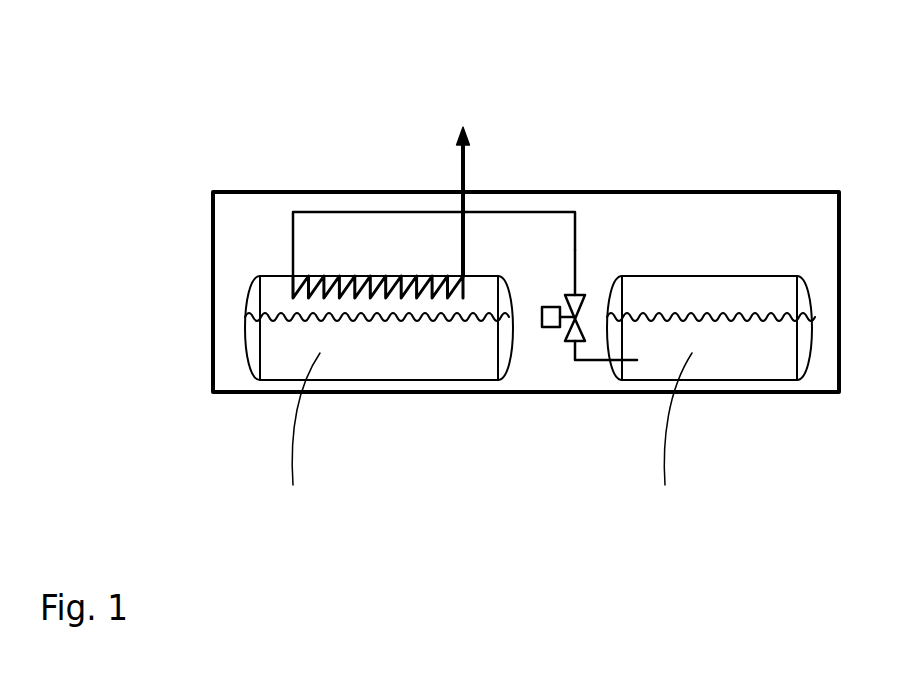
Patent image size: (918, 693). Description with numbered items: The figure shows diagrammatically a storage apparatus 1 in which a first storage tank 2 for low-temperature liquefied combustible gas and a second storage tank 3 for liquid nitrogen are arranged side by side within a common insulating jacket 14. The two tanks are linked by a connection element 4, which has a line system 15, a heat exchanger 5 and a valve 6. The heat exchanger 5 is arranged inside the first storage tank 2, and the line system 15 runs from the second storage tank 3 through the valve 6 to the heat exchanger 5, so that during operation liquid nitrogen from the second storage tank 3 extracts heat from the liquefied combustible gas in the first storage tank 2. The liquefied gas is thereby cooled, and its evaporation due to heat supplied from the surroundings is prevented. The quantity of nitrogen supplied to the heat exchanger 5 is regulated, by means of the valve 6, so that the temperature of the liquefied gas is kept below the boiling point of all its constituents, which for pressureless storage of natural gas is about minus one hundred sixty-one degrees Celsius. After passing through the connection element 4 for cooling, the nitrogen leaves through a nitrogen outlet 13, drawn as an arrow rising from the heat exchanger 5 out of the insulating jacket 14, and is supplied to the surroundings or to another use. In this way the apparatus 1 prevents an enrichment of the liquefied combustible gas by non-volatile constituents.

The apparatus 1 is at (172, 165).
The first storage tank 2 is at (360, 382).
The second storage tank 3 is at (753, 382).
The connection element 4 is at (497, 212).
The heat exchanger 5 is at (292, 287).
The valve 6 is at (565, 320).
The nitrogen outlet 13 is at (457, 135).
The insulating jacket 14 is at (747, 192).
The line system 15 is at (578, 260).